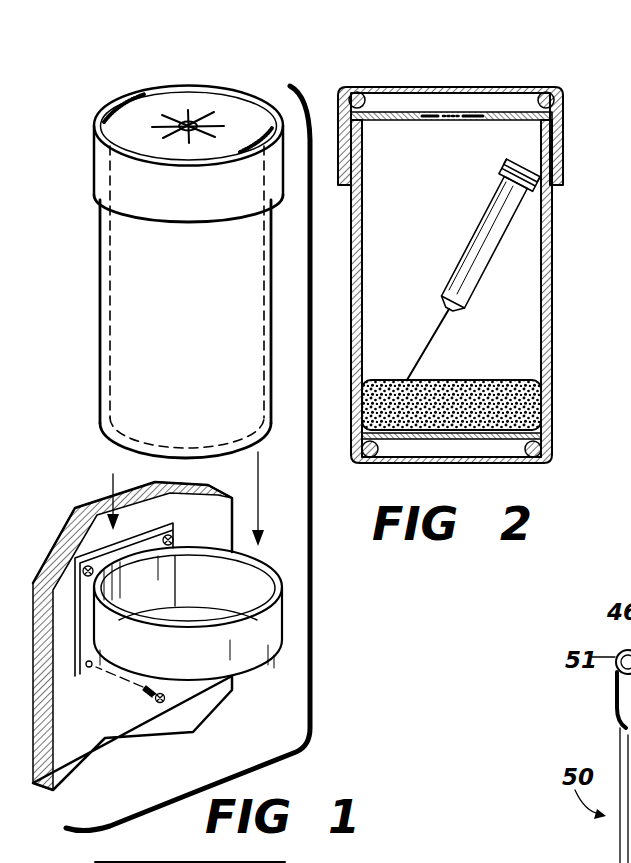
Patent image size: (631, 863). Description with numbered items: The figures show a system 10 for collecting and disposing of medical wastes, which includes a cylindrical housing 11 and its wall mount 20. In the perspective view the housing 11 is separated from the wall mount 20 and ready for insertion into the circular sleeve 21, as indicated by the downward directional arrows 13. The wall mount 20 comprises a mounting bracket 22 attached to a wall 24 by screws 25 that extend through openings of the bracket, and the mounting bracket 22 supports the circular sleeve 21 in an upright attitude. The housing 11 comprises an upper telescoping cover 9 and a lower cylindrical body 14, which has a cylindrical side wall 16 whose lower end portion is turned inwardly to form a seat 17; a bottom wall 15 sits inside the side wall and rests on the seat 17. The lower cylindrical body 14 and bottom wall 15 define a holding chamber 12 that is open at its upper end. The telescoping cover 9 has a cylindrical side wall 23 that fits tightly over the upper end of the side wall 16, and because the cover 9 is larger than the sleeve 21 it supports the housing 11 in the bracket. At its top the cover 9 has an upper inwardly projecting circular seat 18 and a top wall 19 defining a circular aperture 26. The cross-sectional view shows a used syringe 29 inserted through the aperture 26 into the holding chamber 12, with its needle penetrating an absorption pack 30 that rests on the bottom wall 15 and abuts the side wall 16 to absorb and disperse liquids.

In FIG. 1, the upper telescoping cover 9 is at (92, 156).
In FIG. 1, the system for collecting and disposing of medical wastes 10 is at (142, 40).
In FIG. 1, the cylindrical housing 11 is at (90, 298).
In FIG. 2, the cylindrical housing 11 is at (600, 358).
In FIG. 2, the holding chamber 12 is at (434, 251).
In FIG. 1, the downward directional arrows 13 is at (113, 474).
In FIG. 1, the lower cylindrical body 14 is at (112, 378).
In FIG. 2, the lower cylindrical body 14 is at (553, 302).
In FIG. 2, the bottom wall 15 is at (497, 446).
In FIG. 1, the cylindrical side wall 16 is at (101, 403).
In FIG. 2, the cylindrical side wall 16 is at (553, 212).
In FIG. 2, the seat 17 is at (378, 466).
In FIG. 2, the upper inwardly projecting circular seat 18 is at (540, 93).
In FIG. 2, the top wall 19 is at (397, 112).
In FIG. 1, the wall mount 20 is at (287, 560).
In FIG. 1, the circular sleeve 21 is at (245, 662).
In FIG. 1, the mounting bracket 22 is at (173, 526).
In FIG. 1, the cylindrical side wall 23 is at (275, 182).
In FIG. 2, the cylindrical side wall 23 is at (563, 129).
In FIG. 1, the wall 24 is at (47, 563).
In FIG. 1, the screws 25 is at (152, 702).
In FIG. 2, the circular aperture 26 is at (452, 110).
In FIG. 2, the used syringe 29 is at (456, 290).
In FIG. 2, the absorption pack 30 is at (505, 378).